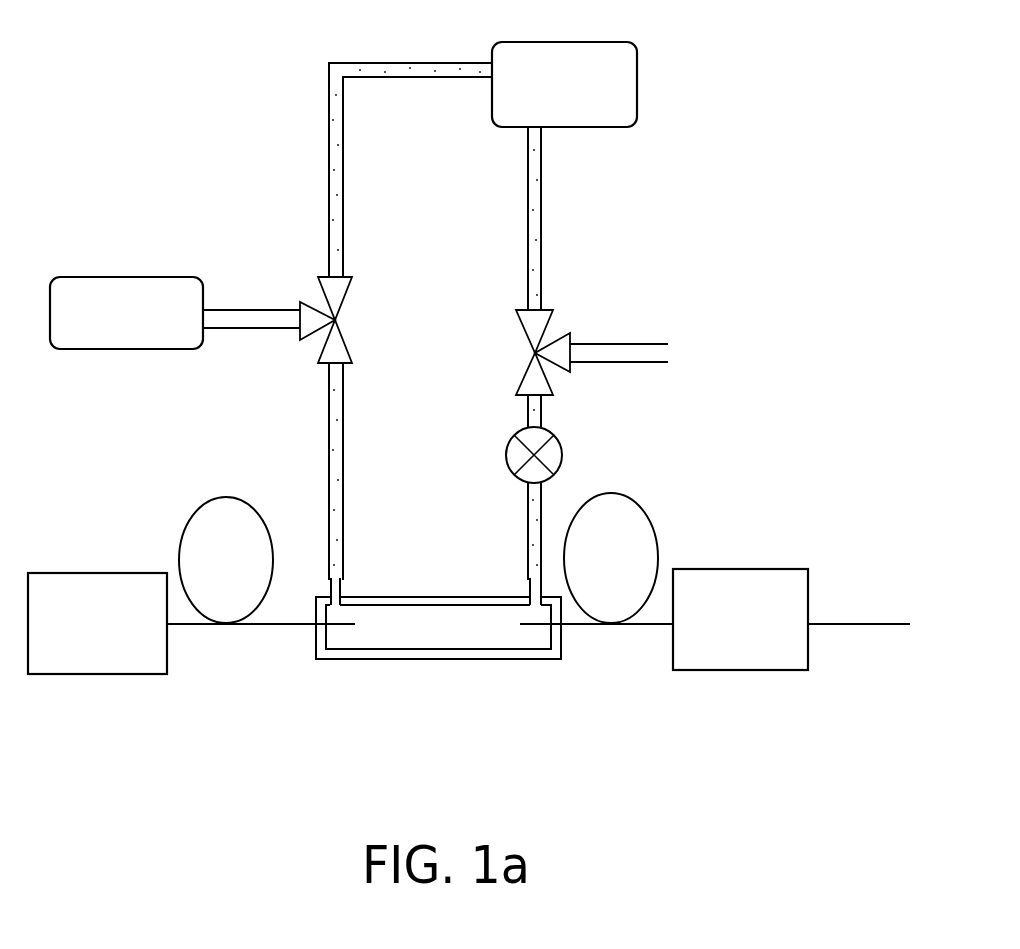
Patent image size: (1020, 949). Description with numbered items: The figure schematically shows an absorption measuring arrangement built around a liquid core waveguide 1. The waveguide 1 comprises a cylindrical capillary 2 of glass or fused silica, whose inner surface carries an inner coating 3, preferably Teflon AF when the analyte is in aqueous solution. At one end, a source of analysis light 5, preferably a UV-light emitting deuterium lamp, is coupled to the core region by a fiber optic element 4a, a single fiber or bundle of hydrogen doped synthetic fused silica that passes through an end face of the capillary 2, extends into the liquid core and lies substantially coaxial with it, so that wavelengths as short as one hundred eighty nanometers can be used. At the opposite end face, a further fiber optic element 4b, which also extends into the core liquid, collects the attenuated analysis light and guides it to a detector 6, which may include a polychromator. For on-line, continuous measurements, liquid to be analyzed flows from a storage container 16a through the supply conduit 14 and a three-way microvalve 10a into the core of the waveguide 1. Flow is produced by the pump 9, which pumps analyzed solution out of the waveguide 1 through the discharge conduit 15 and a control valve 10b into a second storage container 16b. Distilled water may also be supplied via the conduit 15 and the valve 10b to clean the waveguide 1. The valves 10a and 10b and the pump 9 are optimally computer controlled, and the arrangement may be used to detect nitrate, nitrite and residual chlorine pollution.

The liquid core waveguide 1 is at (365, 660).
The cylindrical capillary 2 is at (500, 612).
The inner coating 3 is at (482, 655).
The fiber optic element 4a is at (228, 625).
The further fiber optic element 4b is at (610, 623).
The source of analysis light 5 is at (90, 674).
The detector 6 is at (760, 670).
The pump 9 is at (563, 451).
The three-way microvalve 10a is at (349, 302).
The control valve 10b is at (547, 323).
The supply conduit 14 is at (329, 482).
The discharge conduit 15 is at (529, 529).
The storage container 16a is at (492, 50).
The storage container 16b is at (170, 277).